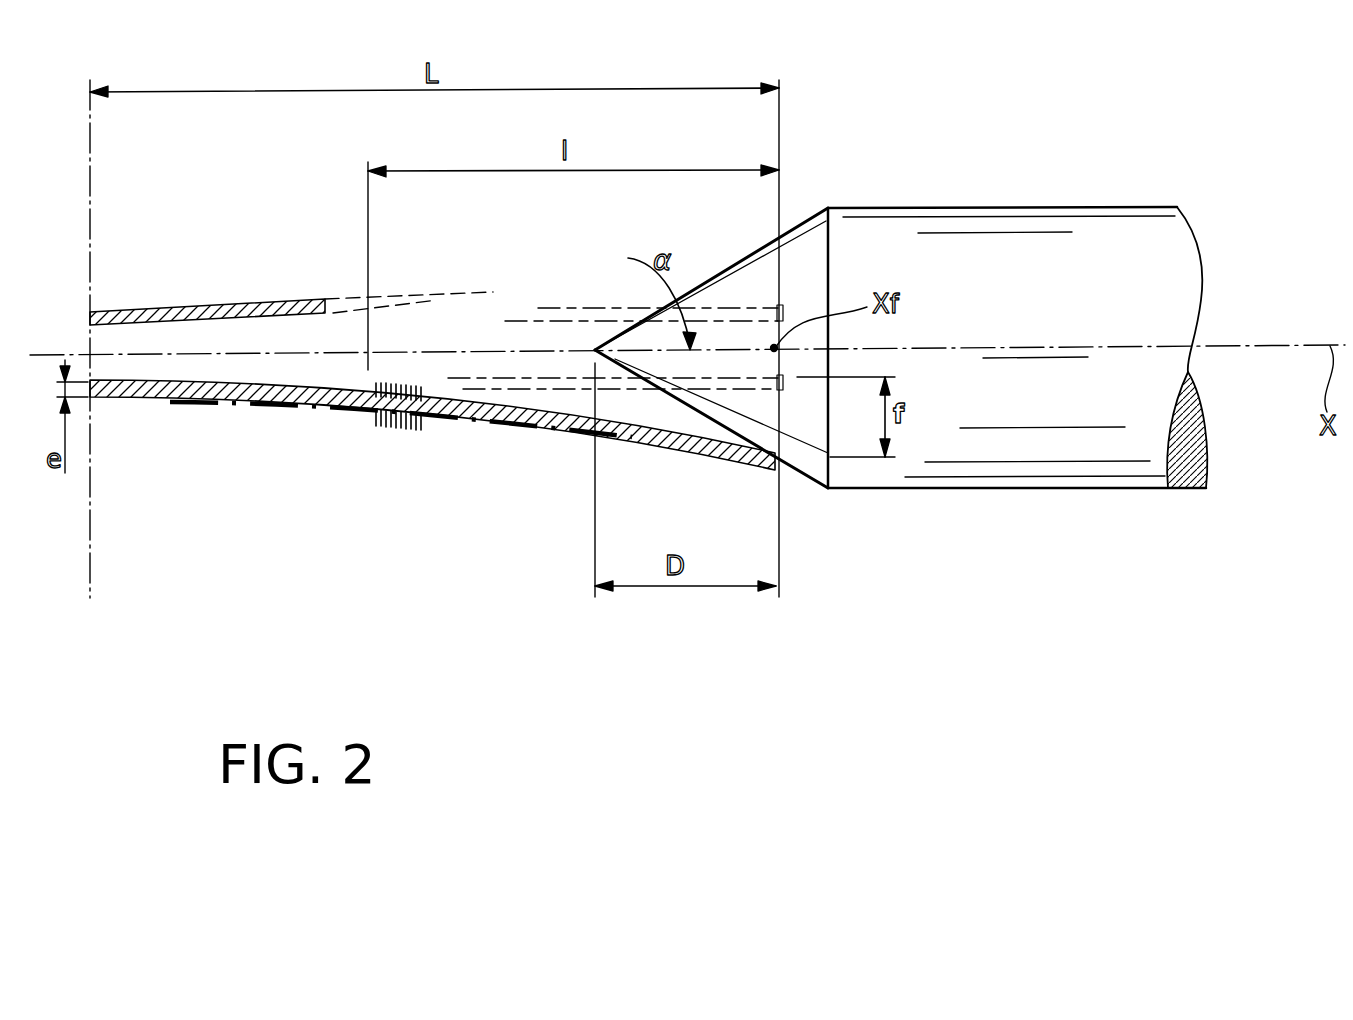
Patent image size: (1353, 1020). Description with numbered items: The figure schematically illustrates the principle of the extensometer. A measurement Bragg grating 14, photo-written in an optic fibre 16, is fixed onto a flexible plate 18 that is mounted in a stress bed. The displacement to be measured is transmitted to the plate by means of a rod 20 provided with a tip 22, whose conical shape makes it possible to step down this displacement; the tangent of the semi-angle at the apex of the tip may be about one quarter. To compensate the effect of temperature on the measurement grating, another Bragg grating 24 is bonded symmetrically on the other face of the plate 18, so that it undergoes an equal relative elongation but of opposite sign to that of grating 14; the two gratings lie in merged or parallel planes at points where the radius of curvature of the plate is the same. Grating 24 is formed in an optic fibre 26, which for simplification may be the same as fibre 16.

The measurement Bragg grating 14 is at (377, 383).
The optic fibre 16 is at (163, 377).
The flexible plate 18 is at (740, 465).
The rod 20 is at (1172, 235).
The tip 22 is at (802, 247).
The Bragg grating 24 is at (377, 425).
The optic fibre 26 is at (518, 440).